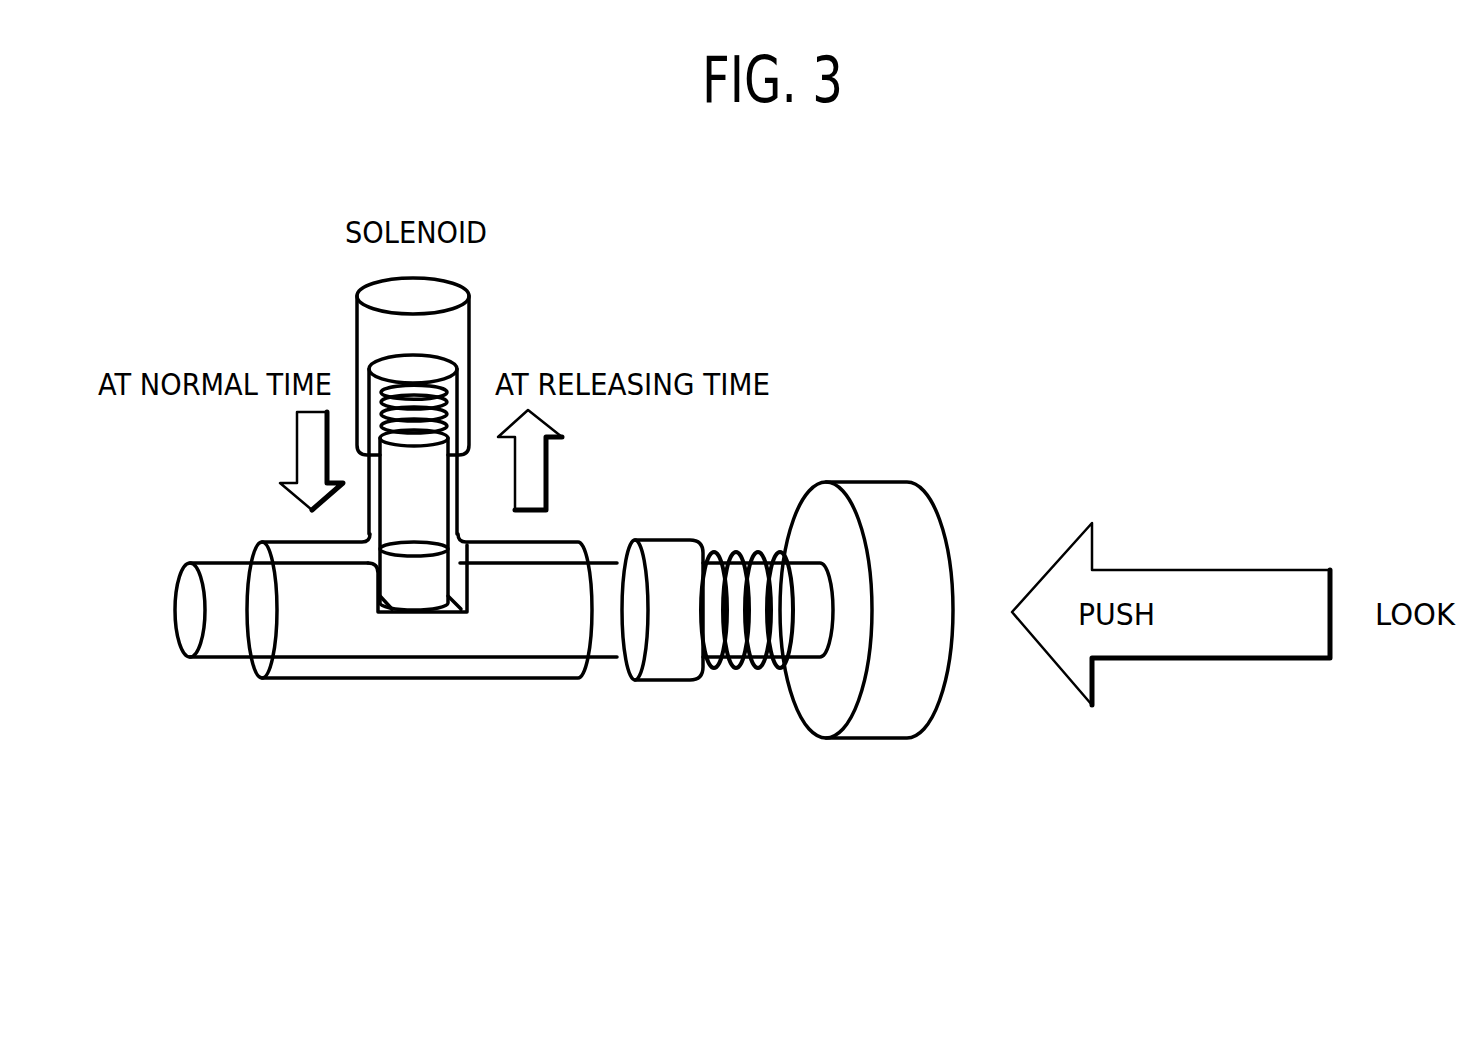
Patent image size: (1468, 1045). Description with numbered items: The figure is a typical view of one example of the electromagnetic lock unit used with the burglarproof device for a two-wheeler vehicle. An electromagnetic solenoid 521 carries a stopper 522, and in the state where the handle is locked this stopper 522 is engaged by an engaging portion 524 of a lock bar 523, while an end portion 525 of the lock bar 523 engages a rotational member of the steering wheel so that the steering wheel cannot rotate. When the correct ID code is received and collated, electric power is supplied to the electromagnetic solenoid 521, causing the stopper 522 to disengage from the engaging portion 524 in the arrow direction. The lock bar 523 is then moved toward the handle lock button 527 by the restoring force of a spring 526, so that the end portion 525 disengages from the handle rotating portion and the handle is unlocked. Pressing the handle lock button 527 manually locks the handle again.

The electromagnetic solenoid 521 is at (462, 325).
The stopper 522 is at (435, 516).
The lock bar 523 is at (310, 680).
The engaging portion 524 is at (408, 605).
The end portion 525 is at (187, 617).
The spring 526 is at (753, 663).
The handle lock button 527 is at (880, 490).